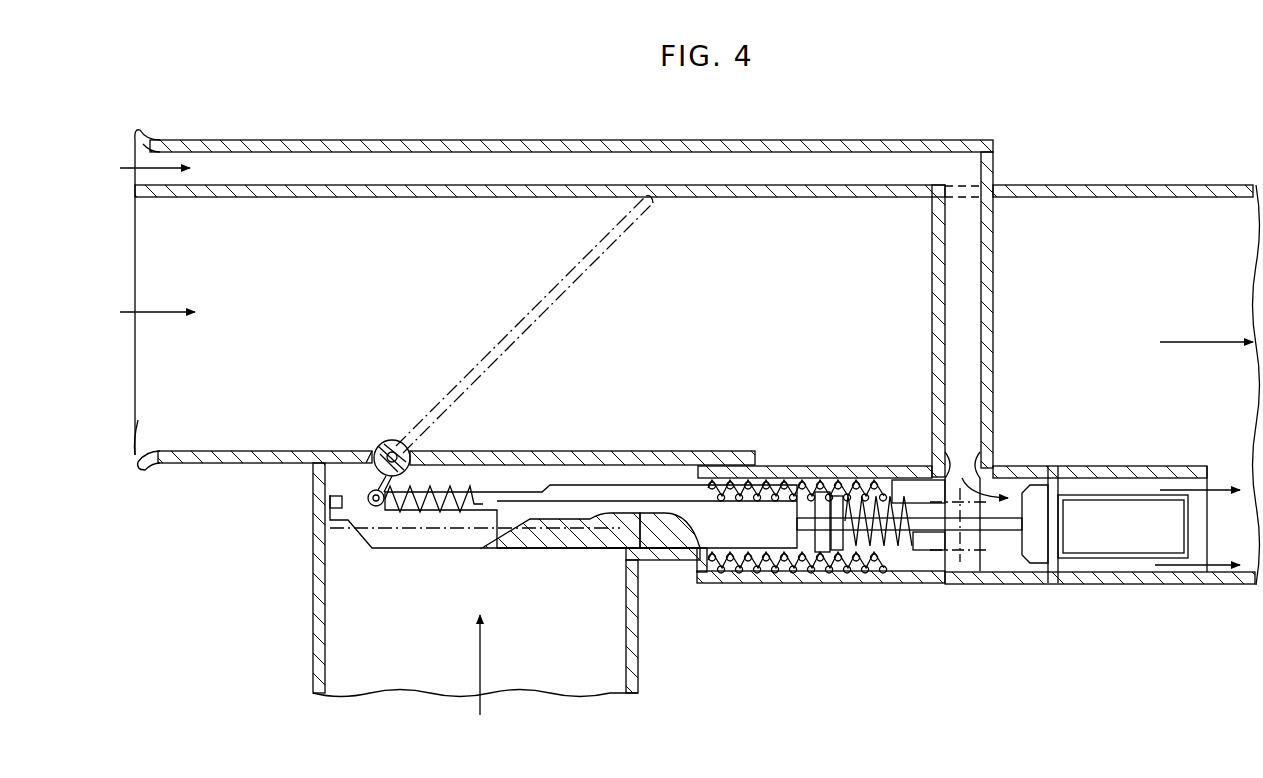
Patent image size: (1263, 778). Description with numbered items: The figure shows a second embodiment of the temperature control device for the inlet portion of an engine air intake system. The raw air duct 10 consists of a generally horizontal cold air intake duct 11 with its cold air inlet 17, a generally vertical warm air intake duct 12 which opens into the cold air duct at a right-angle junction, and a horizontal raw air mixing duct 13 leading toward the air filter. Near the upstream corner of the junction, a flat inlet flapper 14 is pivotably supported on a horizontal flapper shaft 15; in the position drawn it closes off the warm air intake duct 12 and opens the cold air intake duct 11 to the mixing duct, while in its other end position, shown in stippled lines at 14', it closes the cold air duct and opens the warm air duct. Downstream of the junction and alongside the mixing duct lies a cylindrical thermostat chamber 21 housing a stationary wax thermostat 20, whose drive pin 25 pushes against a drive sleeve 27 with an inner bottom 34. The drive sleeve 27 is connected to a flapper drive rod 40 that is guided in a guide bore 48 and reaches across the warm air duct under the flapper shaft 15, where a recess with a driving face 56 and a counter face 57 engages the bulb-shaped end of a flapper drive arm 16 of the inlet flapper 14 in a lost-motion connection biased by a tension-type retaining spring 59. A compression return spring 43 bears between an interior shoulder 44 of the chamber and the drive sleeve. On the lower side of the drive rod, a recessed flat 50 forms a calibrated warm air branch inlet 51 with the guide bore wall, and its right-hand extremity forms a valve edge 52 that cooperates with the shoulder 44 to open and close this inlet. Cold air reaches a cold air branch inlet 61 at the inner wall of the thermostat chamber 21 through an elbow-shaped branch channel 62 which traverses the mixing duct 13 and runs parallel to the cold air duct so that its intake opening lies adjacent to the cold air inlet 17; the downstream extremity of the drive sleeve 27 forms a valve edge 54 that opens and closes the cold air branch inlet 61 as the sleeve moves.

The raw air duct 10 is at (1059, 186).
The cold air intake duct 11 is at (218, 222).
The warm air intake duct 12 is at (352, 661).
The raw air mixing duct 13 is at (1165, 215).
The inlet flapper 14 is at (582, 430).
The inlet flapper in other end position 14' is at (524, 324).
The flapper shaft 15 is at (392, 440).
The flapper drive arm 16 is at (368, 490).
The cold air inlet 17 is at (138, 420).
The wax thermostat 20 is at (1100, 503).
The thermostat chamber 21 is at (1115, 562).
The drive pin 25 is at (975, 540).
The drive sleeve 27 is at (910, 562).
The inner bottom of drive sleeve 34 is at (930, 540).
The flapper drive rod 40 is at (516, 552).
The return spring 43 is at (764, 570).
The interior shoulder 44 is at (706, 466).
The guide bore 48 is at (688, 545).
The recessed flat 50 is at (577, 532).
The warm air branch inlet 51 is at (668, 545).
The valve edge 52 is at (702, 562).
The valve edge 54 is at (936, 450).
The driving face 56 is at (406, 514).
The counter face 57 is at (334, 504).
The retaining spring 59 is at (455, 512).
The cold air branch inlet 61 is at (978, 452).
The branch channel 62 is at (790, 166).